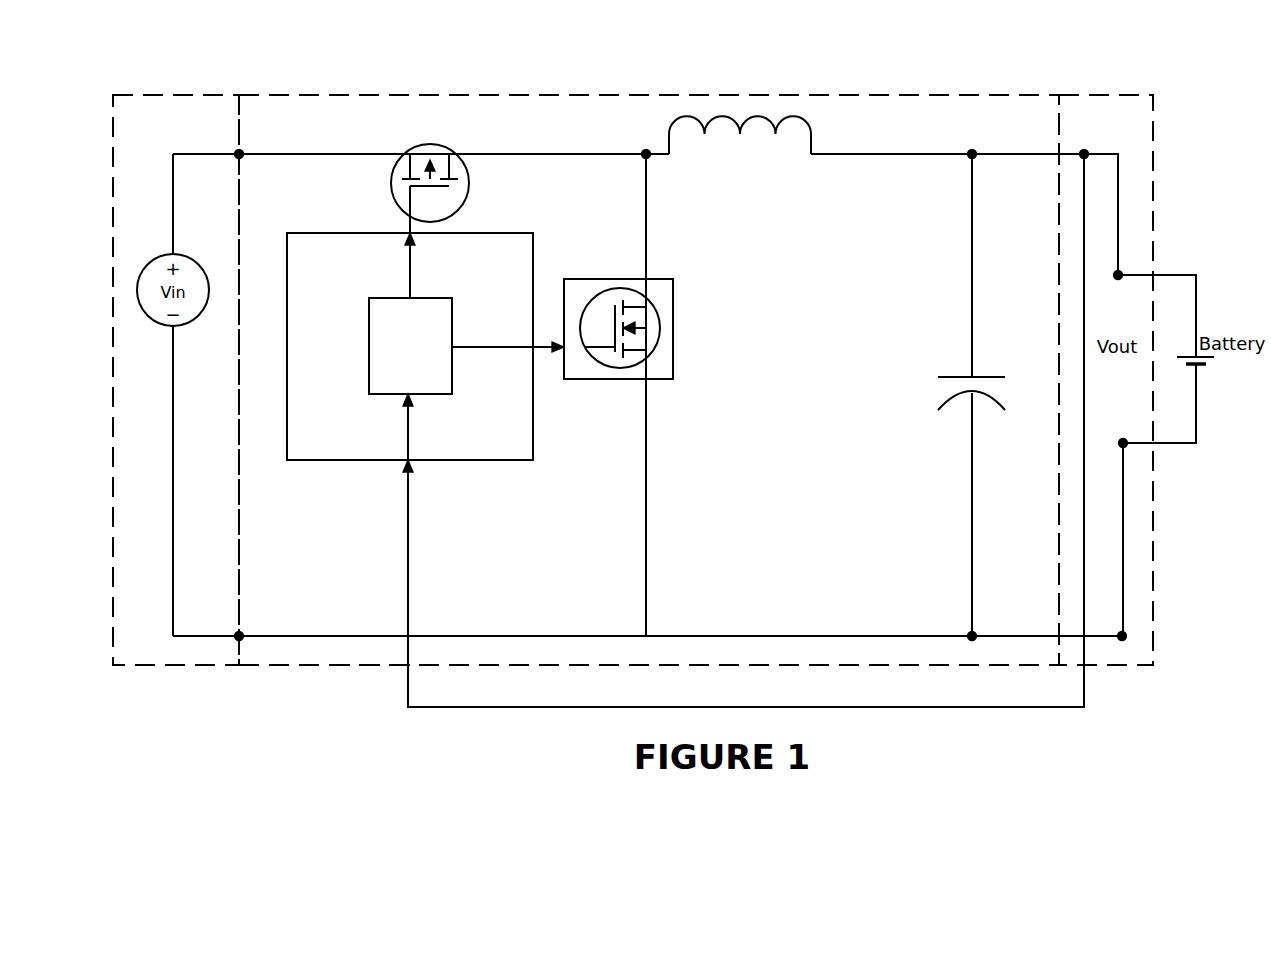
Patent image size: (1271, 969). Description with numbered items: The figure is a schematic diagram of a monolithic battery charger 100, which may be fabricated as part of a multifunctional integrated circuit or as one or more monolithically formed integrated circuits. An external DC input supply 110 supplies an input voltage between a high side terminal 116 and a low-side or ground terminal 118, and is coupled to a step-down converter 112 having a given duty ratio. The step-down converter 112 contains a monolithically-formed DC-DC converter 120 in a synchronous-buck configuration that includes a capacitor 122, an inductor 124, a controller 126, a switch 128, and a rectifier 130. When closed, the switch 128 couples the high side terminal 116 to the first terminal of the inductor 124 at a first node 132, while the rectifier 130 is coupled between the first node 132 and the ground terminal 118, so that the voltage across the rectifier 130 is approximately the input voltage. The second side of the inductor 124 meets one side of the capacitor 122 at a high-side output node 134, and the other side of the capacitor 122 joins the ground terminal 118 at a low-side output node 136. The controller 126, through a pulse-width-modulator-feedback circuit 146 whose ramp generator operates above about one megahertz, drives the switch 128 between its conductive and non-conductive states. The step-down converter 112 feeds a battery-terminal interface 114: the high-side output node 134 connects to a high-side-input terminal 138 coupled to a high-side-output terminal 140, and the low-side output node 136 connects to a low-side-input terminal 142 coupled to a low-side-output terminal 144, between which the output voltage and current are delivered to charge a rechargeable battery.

The monolithic battery charger 100 is at (848, 27).
The external DC input supply 110 is at (191, 354).
The step-down converter 112 is at (649, 353).
The battery-terminal interface 114 is at (1132, 354).
The high side terminal 116 is at (287, 133).
The ground terminal 118 is at (284, 611).
The monolithically-formed DC-DC converter 120 is at (362, 691).
The capacitor 122 is at (925, 367).
The inductor 124 is at (785, 110).
The controller 126 is at (444, 320).
The switch 128 is at (449, 204).
The rectifier 130 is at (661, 329).
The first node 132 is at (600, 130).
The high-side output node 134 is at (930, 133).
The low-side output node 136 is at (923, 611).
The high-side-input terminal 138 is at (1131, 130).
The high-side-output terminal 140 is at (1166, 264).
The low-side-input terminal 142 is at (1168, 613).
The low-side-output terminal 144 is at (1176, 449).
The pulse-width-modulator-feedback circuit 146 is at (466, 321).